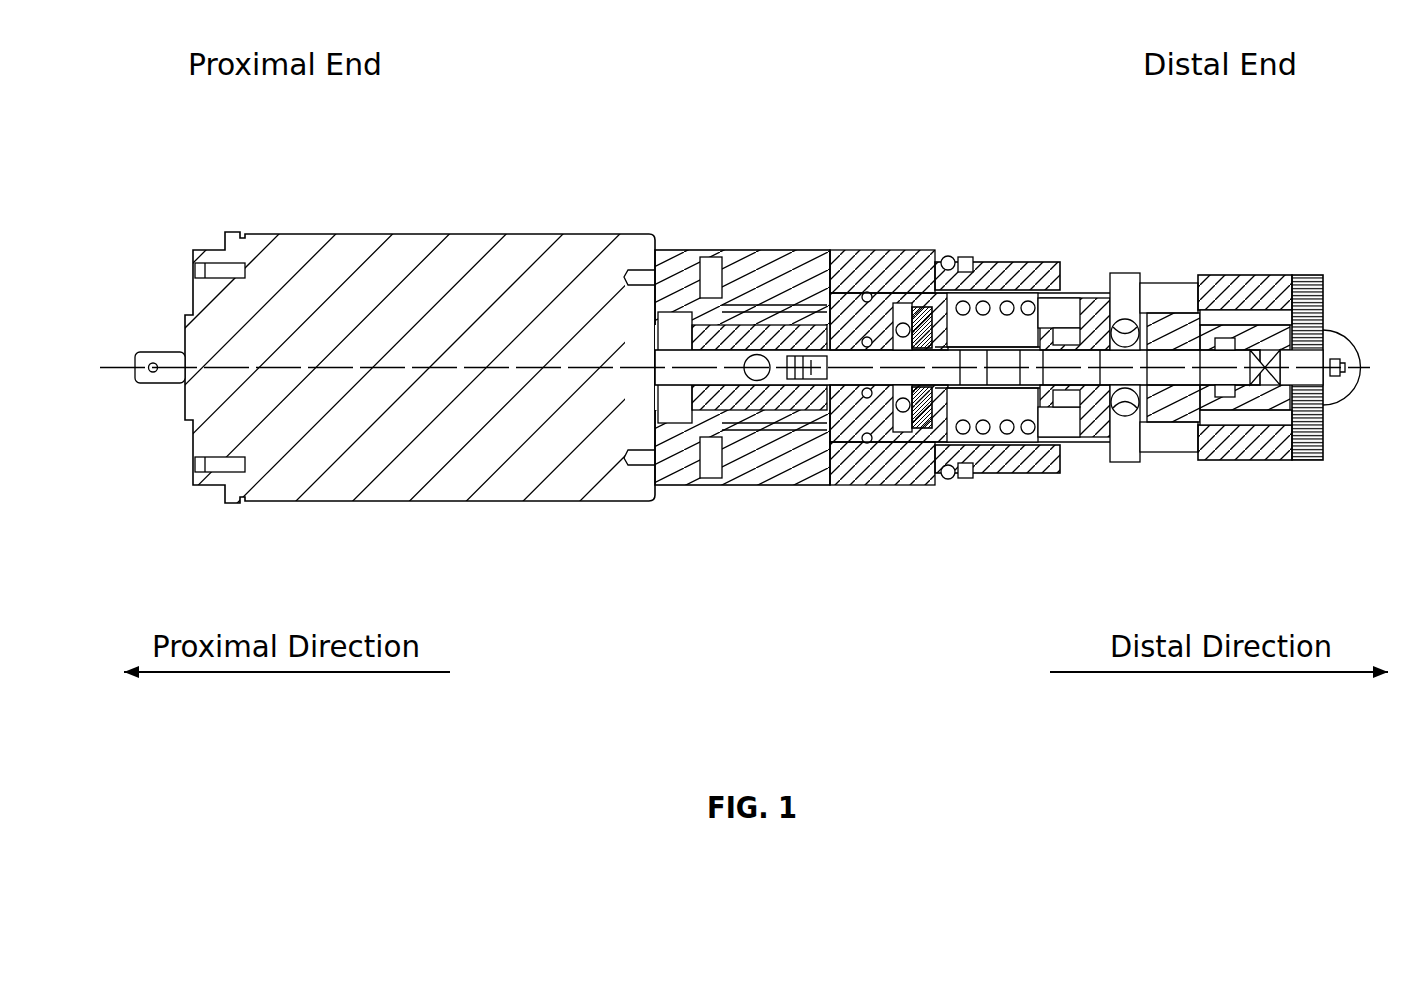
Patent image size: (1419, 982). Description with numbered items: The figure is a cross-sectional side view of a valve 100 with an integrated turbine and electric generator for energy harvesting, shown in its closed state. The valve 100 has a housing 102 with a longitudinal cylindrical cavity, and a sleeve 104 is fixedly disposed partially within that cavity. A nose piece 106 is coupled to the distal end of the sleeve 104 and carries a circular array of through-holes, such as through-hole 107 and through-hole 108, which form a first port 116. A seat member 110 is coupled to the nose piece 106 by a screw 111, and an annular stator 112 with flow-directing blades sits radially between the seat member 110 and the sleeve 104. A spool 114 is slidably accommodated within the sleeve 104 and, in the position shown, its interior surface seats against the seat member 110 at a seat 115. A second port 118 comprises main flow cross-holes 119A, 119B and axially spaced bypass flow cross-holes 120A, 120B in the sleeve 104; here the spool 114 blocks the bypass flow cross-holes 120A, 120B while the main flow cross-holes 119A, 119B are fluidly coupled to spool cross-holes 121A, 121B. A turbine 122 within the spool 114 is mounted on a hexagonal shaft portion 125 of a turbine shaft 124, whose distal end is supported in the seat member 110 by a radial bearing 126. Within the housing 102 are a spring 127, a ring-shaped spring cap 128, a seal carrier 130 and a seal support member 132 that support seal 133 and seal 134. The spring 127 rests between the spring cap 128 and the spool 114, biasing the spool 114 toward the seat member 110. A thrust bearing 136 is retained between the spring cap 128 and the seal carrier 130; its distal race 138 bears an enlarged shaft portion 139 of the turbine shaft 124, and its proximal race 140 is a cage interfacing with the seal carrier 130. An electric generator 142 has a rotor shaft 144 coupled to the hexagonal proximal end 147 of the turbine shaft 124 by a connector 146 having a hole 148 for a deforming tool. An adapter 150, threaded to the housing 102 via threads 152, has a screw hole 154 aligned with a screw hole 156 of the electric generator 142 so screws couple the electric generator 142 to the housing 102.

The valve 100 is at (544, 131).
The housing 102 is at (1012, 290).
The sleeve 104 is at (1197, 325).
The nose piece 106 is at (1312, 301).
The through-hole 107 is at (1328, 290).
The through-hole 108 is at (1312, 432).
The seat member 110 is at (1260, 283).
The screw 111 is at (1337, 362).
The stator 112 is at (1277, 420).
The spool 114 is at (1112, 292).
The seat 115 is at (1242, 415).
The first port 116 is at (1330, 417).
The second port 118 is at (1172, 484).
The main flow cross-hole 119A is at (1126, 281).
The main flow cross-hole 119B is at (1112, 440).
The bypass flow cross-hole 120A is at (1210, 281).
The bypass flow cross-hole 120B is at (1209, 455).
The spool cross-hole 121A is at (1117, 305).
The spool cross-hole 121B is at (1119, 434).
The turbine 122 is at (1127, 464).
The turbine shaft 124 is at (1005, 400).
The shaft portion 125 is at (1182, 347).
The radial bearing 126 is at (1231, 331).
The spring 127 is at (1030, 300).
The spring cap 128 is at (922, 305).
The seal carrier 130 is at (900, 305).
The seal support member 132 is at (843, 440).
The seal 133 is at (866, 292).
The seal 134 is at (863, 398).
The thrust bearing 136 is at (901, 412).
The distal race 138 is at (921, 430).
The enlarged shaft portion 139 is at (945, 390).
The proximal race 140 is at (903, 322).
The electric generator 142 is at (473, 231).
The rotor shaft 144 is at (685, 378).
The connector 146 is at (740, 338).
The proximal end 147 is at (805, 355).
The hole 148 is at (756, 387).
The adapter 150 is at (673, 252).
The threads 152 is at (789, 297).
The screw hole 154 is at (686, 272).
The screw hole 156 is at (637, 271).